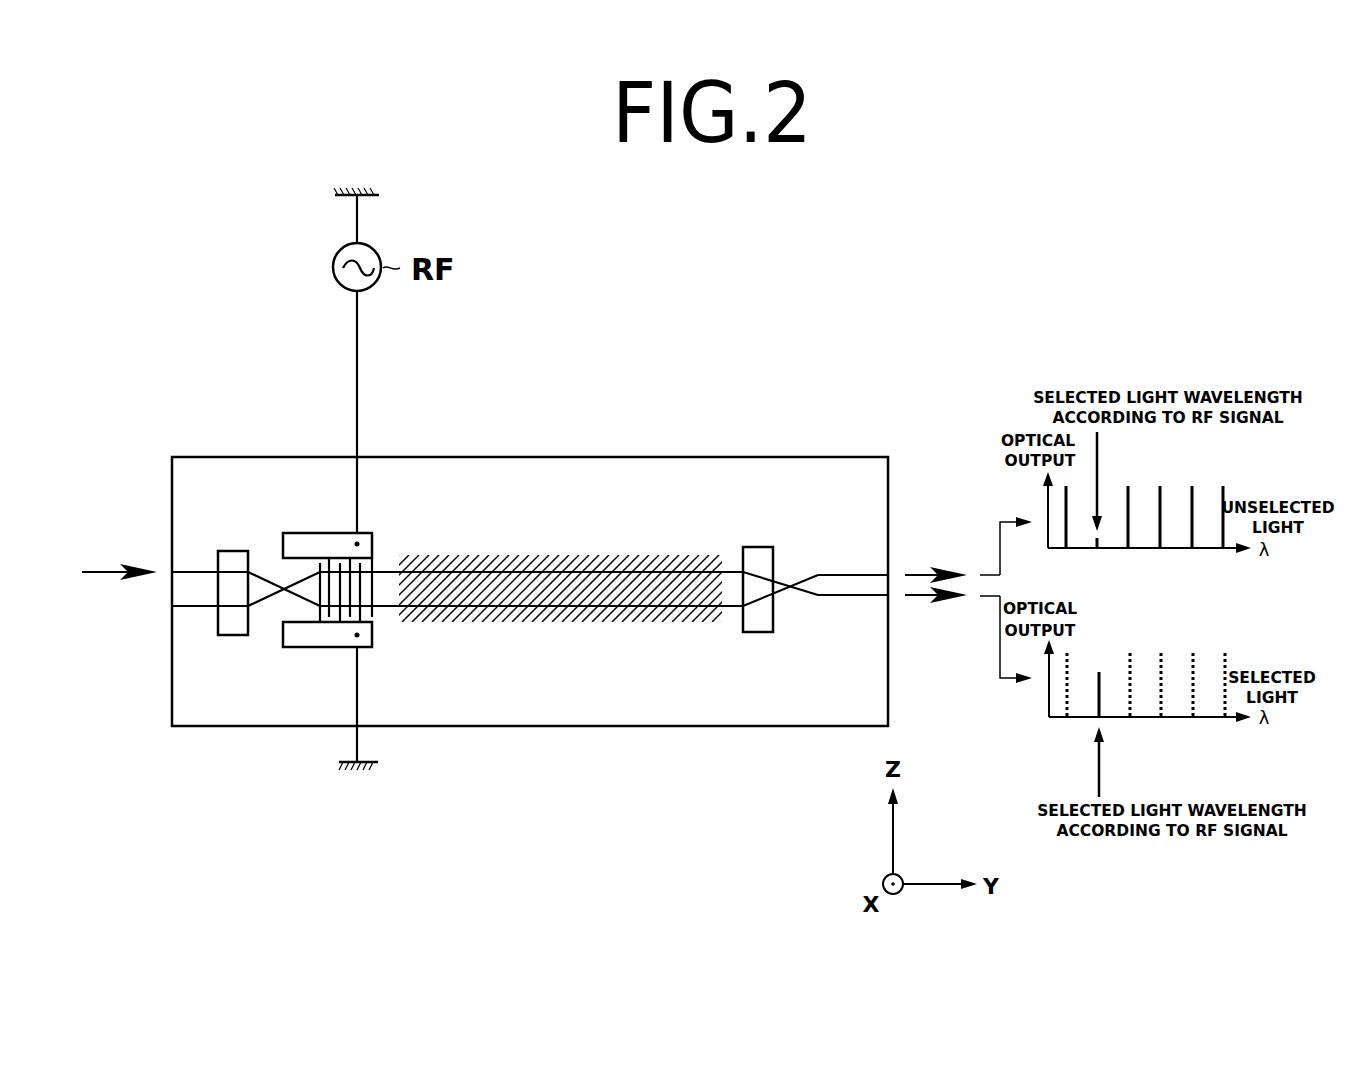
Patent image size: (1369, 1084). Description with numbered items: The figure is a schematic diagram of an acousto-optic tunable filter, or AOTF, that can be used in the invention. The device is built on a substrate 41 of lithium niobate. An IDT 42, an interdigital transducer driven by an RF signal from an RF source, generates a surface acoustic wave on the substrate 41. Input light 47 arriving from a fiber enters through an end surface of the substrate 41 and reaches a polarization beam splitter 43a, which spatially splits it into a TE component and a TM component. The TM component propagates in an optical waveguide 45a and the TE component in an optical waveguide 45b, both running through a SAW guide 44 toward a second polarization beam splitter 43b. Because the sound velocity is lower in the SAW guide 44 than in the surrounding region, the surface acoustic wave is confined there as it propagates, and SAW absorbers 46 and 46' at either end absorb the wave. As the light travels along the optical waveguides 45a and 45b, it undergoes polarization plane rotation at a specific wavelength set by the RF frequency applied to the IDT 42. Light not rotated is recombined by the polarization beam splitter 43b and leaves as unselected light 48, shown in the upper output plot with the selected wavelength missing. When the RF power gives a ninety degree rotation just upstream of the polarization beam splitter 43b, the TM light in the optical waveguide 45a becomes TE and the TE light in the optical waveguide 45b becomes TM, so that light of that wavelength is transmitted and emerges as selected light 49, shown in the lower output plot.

The substrate 41 is at (604, 457).
The IDT 42 is at (318, 533).
The polarization beam splitter 43a is at (278, 595).
The polarization beam splitter 43b is at (794, 590).
The SAW guide 44 is at (470, 558).
The optical waveguide 45a is at (590, 572).
The optical waveguide 45b is at (590, 606).
The SAW absorber 46 is at (758, 555).
The SAW absorber 46' is at (236, 557).
The input light 47 is at (108, 572).
The unselected light 48 is at (918, 572).
The selected light 49 is at (918, 598).